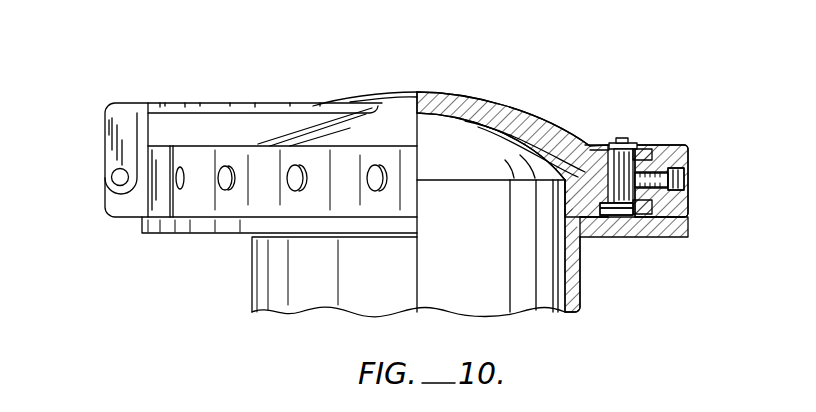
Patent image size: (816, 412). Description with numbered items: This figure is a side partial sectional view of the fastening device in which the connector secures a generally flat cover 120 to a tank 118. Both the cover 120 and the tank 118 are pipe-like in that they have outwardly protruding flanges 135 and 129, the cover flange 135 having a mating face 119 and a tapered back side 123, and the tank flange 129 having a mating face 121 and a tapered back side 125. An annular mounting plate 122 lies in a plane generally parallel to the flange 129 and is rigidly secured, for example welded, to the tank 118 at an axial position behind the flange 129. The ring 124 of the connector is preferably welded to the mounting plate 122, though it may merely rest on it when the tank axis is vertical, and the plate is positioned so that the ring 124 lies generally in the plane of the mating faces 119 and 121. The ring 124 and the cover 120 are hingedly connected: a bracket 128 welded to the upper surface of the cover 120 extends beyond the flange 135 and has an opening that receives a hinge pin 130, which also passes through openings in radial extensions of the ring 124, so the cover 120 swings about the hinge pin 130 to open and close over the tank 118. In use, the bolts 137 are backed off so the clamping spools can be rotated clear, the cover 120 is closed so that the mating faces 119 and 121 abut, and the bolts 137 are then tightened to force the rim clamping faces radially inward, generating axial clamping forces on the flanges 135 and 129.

The tank 118 is at (578, 278).
The mating face 119 is at (522, 165).
The cover 120 is at (497, 104).
The mating face 121 is at (560, 193).
The annular mounting plate 122 is at (218, 234).
The tapered back side 123 is at (609, 147).
The ring 124 is at (686, 146).
The tapered back side 125 is at (593, 237).
The bracket 128 is at (200, 104).
The flange 129 is at (565, 197).
The hinge pin 130 is at (111, 177).
The flange 135 is at (604, 150).
The bolt 137 is at (690, 180).